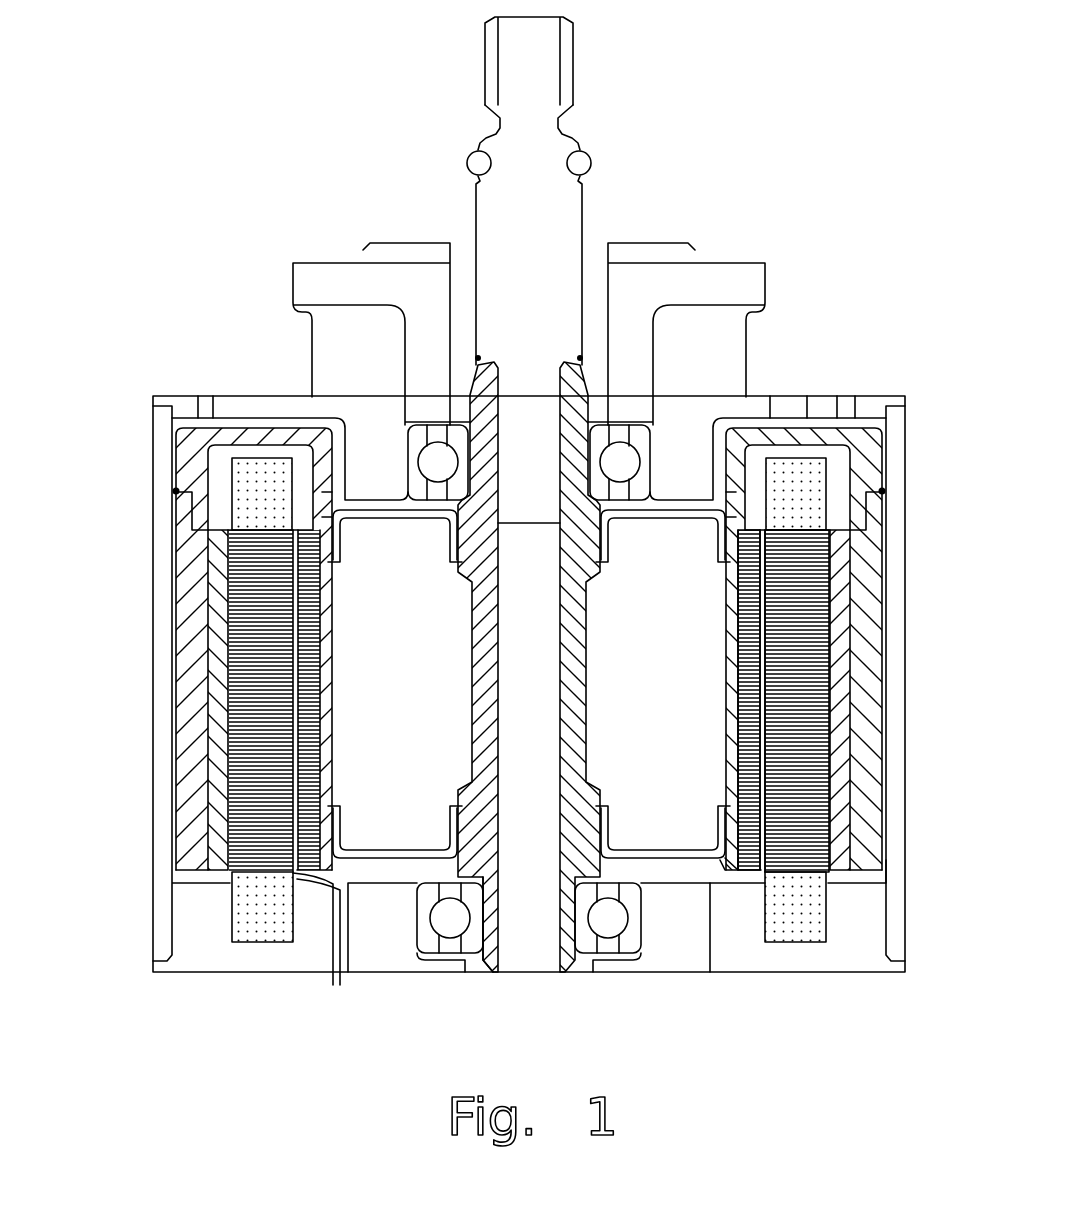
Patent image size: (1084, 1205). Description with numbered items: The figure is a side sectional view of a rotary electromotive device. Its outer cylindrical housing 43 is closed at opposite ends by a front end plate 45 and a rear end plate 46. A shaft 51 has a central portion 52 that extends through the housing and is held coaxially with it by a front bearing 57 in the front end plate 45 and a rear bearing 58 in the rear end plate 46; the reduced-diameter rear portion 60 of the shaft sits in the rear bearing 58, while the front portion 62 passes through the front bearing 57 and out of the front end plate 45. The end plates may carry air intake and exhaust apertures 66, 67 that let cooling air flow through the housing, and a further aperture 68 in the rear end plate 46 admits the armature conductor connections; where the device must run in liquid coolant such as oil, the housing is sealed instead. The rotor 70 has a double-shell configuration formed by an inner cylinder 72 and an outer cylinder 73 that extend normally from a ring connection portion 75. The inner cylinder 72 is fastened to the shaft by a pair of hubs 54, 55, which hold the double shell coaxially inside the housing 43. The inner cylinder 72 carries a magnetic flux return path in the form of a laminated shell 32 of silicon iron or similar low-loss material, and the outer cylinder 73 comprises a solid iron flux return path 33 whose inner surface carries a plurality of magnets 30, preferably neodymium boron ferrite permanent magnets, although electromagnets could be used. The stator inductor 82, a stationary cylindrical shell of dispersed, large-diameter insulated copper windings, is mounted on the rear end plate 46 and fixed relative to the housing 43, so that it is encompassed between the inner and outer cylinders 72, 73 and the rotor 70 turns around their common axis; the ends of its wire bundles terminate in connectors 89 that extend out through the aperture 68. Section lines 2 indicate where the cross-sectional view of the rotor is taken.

The section lines 2— 2 is at (150, 666).
The magnets 30 is at (838, 670).
The shell 32 is at (743, 870).
The magnetic flux return path 33 is at (177, 773).
The outer cylindrical housing 43 is at (155, 487).
The front end plate 45 is at (717, 262).
The rear end plate 46 is at (665, 972).
The shaft 51 is at (573, 100).
The central portion 52 is at (582, 668).
The hub 54 is at (417, 847).
The hub 55 is at (417, 523).
The front bearing 57 is at (438, 460).
The rear bearing 58 is at (603, 923).
The rear portion 60 is at (493, 972).
The front portion 62 is at (478, 358).
The air intake aperture 66 is at (793, 403).
The exhaust aperture 67 is at (205, 400).
The aperture 68 is at (333, 972).
The rotor 70 is at (733, 742).
The inner cylinder 72 is at (725, 873).
The outer cylinder 73 is at (885, 865).
The ring connection portion 75 is at (288, 430).
The stator inductor 82 is at (250, 917).
The connectors 89 is at (337, 980).